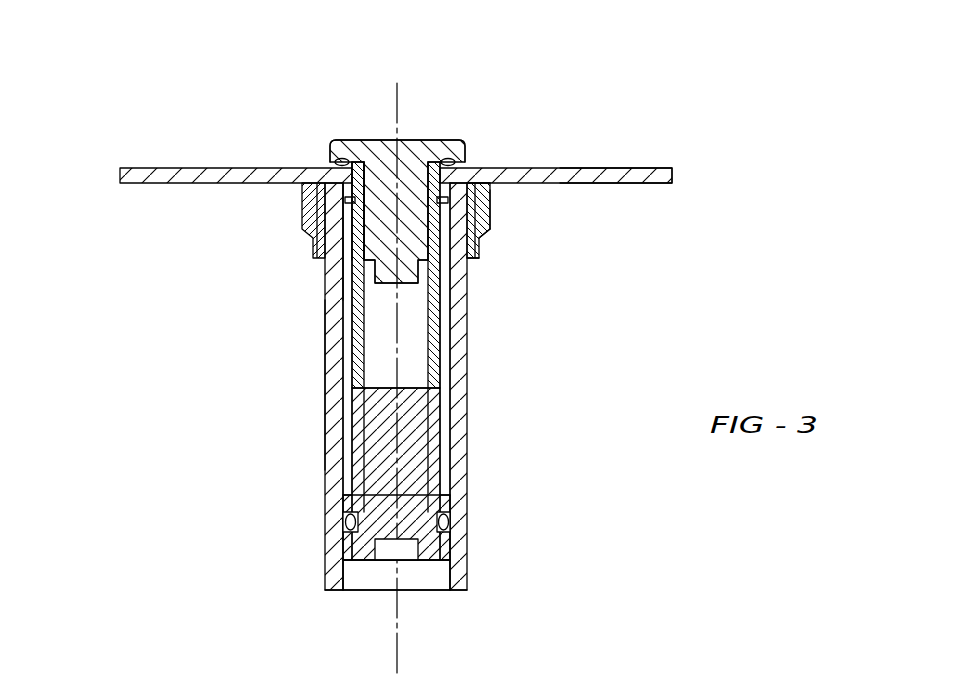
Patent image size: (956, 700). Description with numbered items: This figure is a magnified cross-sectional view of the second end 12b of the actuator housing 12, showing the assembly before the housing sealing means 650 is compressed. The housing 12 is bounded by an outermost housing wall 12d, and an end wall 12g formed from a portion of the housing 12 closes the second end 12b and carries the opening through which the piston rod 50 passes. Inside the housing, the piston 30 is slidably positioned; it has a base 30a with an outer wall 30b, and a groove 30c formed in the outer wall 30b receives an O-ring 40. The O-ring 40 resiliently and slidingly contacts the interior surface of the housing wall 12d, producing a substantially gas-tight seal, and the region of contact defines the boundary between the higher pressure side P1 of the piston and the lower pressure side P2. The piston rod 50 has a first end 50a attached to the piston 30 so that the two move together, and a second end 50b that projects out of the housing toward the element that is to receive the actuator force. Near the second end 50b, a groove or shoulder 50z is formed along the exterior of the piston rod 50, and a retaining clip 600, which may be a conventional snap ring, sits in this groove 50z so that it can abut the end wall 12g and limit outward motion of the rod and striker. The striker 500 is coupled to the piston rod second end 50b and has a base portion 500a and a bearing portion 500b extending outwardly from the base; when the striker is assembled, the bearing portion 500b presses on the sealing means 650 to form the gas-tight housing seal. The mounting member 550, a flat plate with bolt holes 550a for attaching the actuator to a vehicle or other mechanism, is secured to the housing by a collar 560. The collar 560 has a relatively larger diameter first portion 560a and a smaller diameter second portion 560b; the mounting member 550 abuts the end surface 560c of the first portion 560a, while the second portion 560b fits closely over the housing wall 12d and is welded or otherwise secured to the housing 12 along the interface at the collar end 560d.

The housing 12 is at (338, 432).
The second end 12b is at (332, 225).
The housing wall 12d is at (330, 387).
The end wall 12g is at (340, 190).
The piston 30 is at (417, 508).
The base 30a is at (387, 522).
The outer wall 30b is at (442, 548).
The groove 30c is at (347, 523).
The O-ring 40 is at (347, 520).
The piston rod 50 is at (357, 310).
The first end 50a is at (410, 485).
The second end 50b is at (357, 217).
The groove 50z is at (437, 203).
The striker 500 is at (373, 140).
The base portion 500a is at (408, 183).
The bearing portion 500b is at (444, 152).
The mounting member 550 is at (128, 167).
The bolt holes 550a is at (643, 175).
The collar 560 is at (492, 187).
The first portion 560a is at (485, 207).
The second portion 560b is at (473, 243).
The end surface 560c is at (485, 190).
The collar end 560d is at (468, 258).
The retaining clip 600 is at (350, 200).
The sealing means 650 is at (337, 165).
The higher pressure side P1 is at (370, 578).
The lower pressure side P2 is at (347, 463).